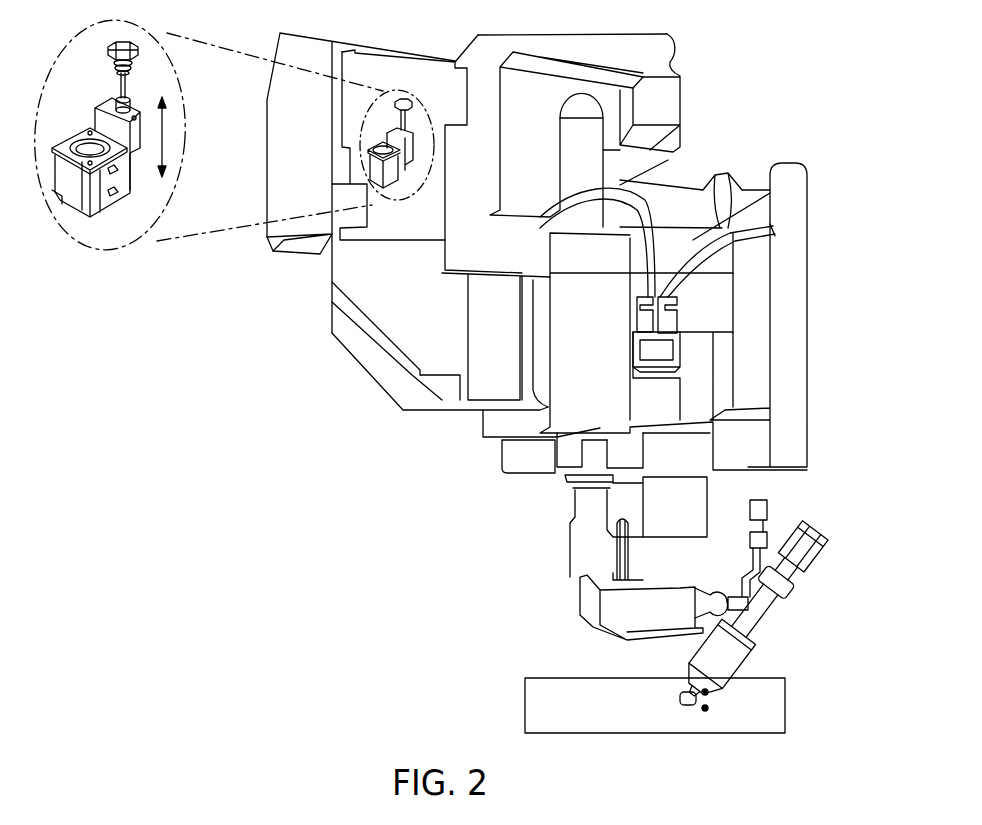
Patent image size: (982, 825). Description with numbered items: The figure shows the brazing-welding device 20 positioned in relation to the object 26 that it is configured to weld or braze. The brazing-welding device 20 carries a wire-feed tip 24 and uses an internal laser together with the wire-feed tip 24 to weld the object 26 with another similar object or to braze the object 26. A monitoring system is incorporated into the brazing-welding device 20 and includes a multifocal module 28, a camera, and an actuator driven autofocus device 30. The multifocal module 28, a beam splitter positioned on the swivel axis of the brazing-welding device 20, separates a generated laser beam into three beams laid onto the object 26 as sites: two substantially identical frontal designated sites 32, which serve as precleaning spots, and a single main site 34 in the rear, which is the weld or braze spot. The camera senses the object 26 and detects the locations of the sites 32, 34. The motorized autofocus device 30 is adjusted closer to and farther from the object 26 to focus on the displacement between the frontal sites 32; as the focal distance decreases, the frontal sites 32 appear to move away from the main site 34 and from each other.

The brazing-welding device 20 is at (307, 284).
The wire-feed tip 24 is at (750, 648).
The object 26 is at (512, 699).
The multifocal module 28 is at (607, 365).
The actuator driven autofocus device 30 is at (63, 207).
The frontal designated sites 32 is at (710, 708).
The main site 34 is at (680, 699).